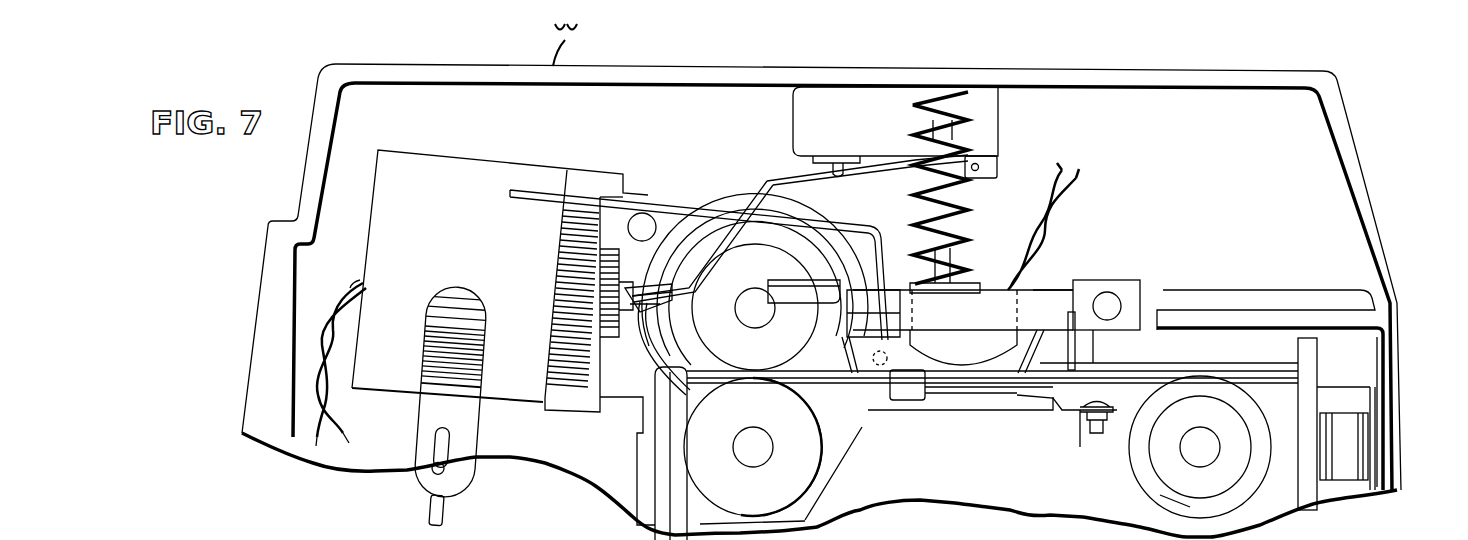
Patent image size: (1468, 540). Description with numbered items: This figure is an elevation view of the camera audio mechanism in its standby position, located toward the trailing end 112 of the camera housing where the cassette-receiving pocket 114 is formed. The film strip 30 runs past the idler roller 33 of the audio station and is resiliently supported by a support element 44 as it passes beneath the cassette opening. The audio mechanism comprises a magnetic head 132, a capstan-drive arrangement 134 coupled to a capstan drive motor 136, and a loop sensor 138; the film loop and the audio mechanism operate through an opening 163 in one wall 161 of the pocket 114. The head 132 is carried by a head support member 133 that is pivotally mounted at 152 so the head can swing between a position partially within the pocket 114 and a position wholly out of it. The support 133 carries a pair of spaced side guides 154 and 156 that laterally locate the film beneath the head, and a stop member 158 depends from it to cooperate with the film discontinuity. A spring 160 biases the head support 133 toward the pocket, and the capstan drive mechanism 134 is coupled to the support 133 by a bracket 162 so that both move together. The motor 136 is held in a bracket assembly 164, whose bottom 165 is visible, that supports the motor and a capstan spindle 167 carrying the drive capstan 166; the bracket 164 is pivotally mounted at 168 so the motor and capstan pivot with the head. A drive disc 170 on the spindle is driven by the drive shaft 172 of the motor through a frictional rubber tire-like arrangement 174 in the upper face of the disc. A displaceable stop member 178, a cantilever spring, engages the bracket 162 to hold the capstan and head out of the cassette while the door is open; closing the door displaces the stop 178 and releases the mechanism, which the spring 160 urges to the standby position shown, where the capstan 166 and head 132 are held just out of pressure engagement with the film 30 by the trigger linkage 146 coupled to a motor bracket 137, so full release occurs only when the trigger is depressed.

The trailing end 112 is at (1350, 152).
The cassette-receiving pocket 114 is at (1355, 368).
The magnetic head 132 is at (978, 330).
The head support member 133 is at (1033, 290).
The capstan-drive arrangement 134 is at (750, 191).
The capstan drive motor 136 is at (470, 168).
The motor bracket 137 is at (430, 318).
The loop sensor 138 is at (853, 129).
The linkage 146 is at (447, 510).
The pivot 152 is at (1120, 292).
The side guide 154 is at (862, 384).
The side guide 156 is at (1022, 375).
The stop member 158 is at (1078, 347).
The spring 160 is at (978, 195).
The wall 161 is at (1230, 310).
The bracket 162 is at (813, 247).
The opening 163 is at (643, 422).
The bracket assembly 164 is at (573, 170).
The bottom of bracket assembly 165 is at (617, 217).
The drive capstan 166 is at (715, 250).
The capstan spindle 167 is at (750, 305).
The pivotal mounting 168 is at (642, 227).
The drive disc 170 is at (833, 227).
The drive shaft 172 is at (622, 273).
The rubber tire-like arrangement 174 is at (780, 210).
The displaceable stop member 178 is at (790, 280).
The film strip 30 is at (857, 375).
The idler roller 33 is at (742, 418).
The support element 44 is at (1050, 400).